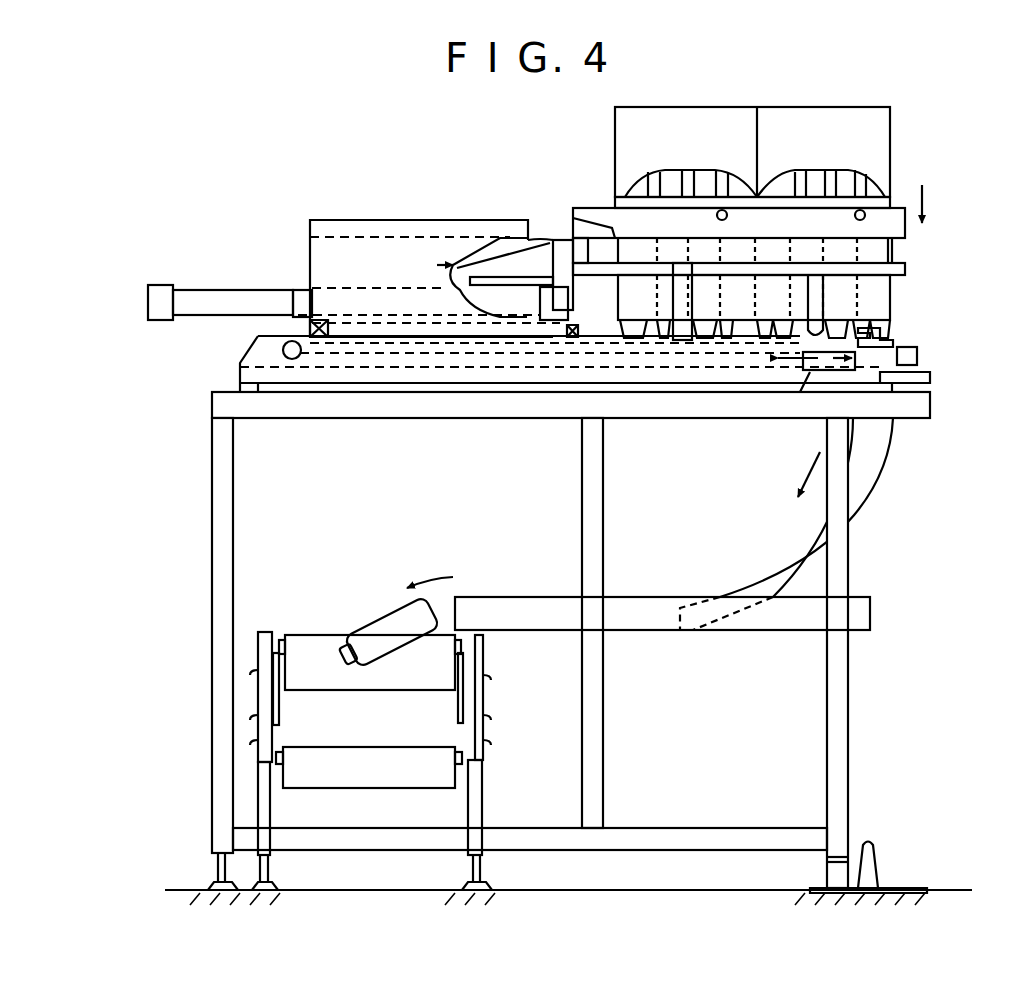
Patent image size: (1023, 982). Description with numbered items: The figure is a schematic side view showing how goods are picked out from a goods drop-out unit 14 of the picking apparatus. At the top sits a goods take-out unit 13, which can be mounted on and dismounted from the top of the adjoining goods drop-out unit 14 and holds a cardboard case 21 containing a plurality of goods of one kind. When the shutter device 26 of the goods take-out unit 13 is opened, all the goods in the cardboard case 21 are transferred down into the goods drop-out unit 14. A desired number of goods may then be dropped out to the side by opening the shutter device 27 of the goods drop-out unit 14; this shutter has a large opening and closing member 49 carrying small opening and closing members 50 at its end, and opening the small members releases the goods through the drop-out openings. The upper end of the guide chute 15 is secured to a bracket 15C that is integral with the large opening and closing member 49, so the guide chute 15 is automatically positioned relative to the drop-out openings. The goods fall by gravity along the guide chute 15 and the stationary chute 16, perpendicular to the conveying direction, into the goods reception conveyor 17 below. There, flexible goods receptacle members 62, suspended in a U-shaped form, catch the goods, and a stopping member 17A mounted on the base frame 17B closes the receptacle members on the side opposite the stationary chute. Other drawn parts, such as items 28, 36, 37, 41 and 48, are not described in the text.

The goods take-out unit 13 is at (598, 203).
The goods drop-out unit 14 is at (885, 292).
The guide chute 15 is at (880, 445).
The bracket 15C is at (930, 407).
The stationary chute 16 is at (870, 612).
The goods reception conveyor 17 is at (325, 632).
The stopping member 17A is at (273, 703).
The base frame 17B is at (257, 700).
The cardboard case 21 is at (872, 128).
The shutter device 26 is at (553, 235).
The shutter device 27 is at (728, 377).
The support plate 28 is at (893, 223).
The actuator cylinder 36 is at (363, 220).
The piston rod 37 is at (225, 295).
The mounting bracket 41 is at (627, 295).
The conveyor table 48 is at (518, 365).
The large opening and closing member 49 is at (810, 370).
The small opening and closing member 50 is at (930, 369).
The goods receptacle member 62 is at (353, 692).